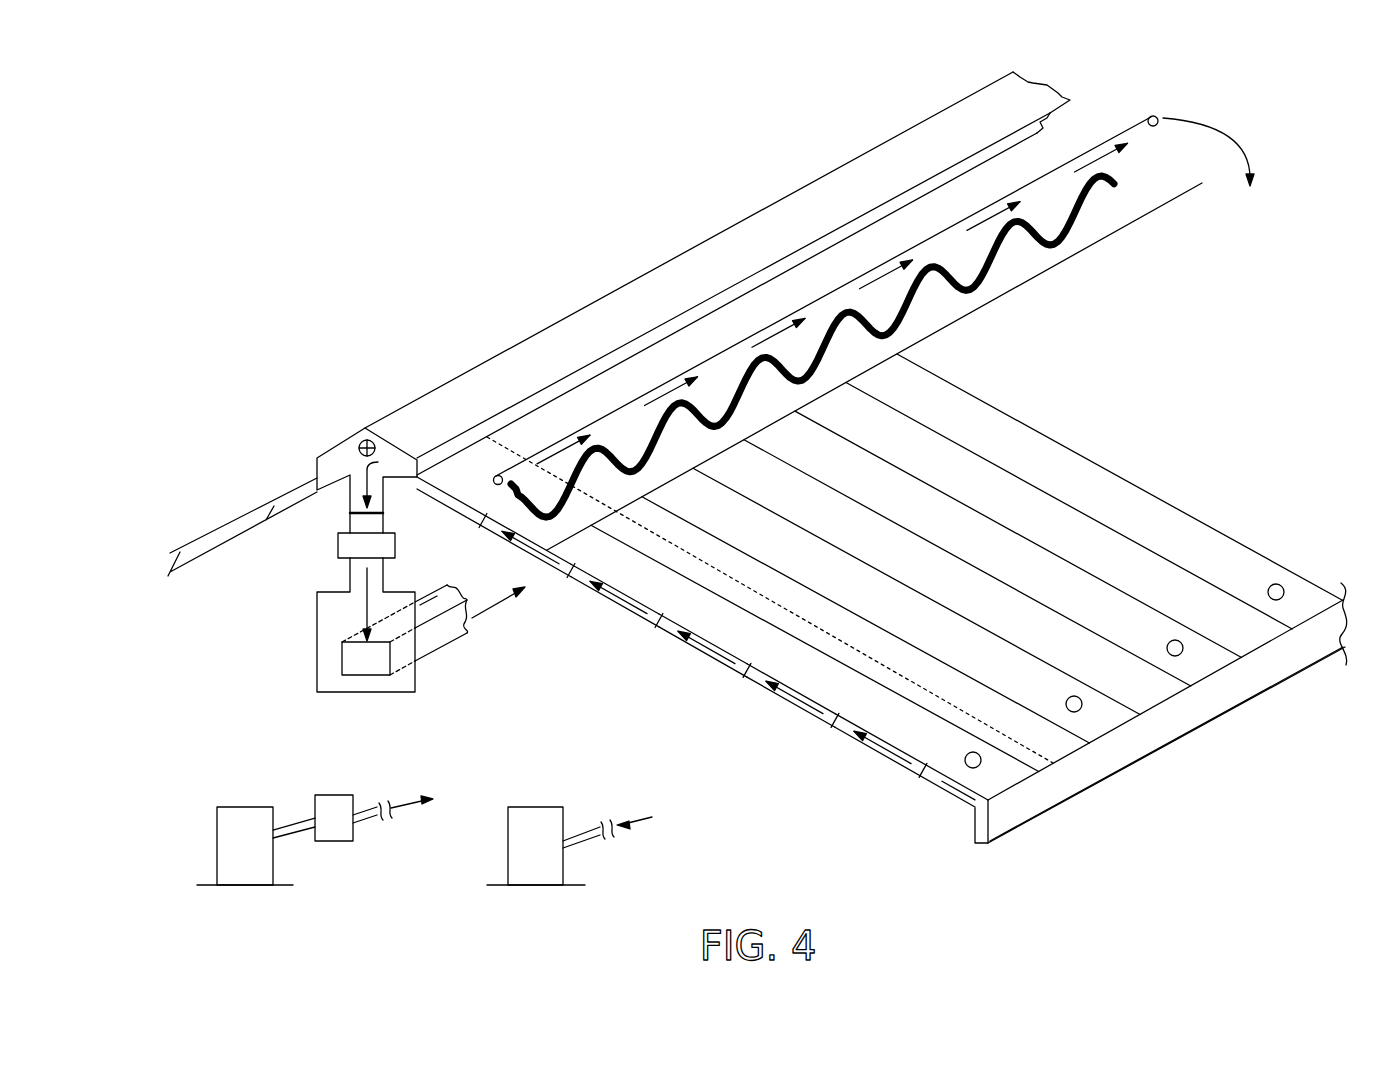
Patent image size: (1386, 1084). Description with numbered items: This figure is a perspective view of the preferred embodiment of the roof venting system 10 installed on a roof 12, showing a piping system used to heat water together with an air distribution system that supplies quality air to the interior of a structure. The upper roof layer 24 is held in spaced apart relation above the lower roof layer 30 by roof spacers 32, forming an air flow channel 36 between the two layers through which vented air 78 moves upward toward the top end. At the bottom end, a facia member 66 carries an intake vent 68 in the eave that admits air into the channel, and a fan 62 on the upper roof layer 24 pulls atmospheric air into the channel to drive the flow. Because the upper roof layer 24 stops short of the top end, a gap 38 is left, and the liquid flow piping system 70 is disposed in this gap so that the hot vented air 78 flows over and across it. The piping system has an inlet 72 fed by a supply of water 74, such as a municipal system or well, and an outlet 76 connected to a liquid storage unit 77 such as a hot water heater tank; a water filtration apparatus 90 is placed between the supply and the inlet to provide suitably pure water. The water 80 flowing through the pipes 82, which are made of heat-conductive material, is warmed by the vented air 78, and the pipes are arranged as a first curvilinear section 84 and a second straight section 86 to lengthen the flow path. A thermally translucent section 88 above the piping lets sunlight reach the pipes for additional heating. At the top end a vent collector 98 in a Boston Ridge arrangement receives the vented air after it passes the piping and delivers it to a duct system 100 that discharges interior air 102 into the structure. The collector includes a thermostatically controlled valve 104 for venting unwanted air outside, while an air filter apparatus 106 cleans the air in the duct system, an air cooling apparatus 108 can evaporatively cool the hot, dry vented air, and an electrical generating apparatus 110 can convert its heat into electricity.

The venting system 10 is at (552, 211).
The roof 12 is at (1088, 367).
The upper roof layer 24 is at (1113, 492).
The lower roof layer 30 is at (795, 706).
The roof spacers 32 is at (920, 770).
The air flow channel 36 is at (652, 621).
The gap 38 is at (475, 521).
The fan 62 is at (1082, 706).
The facia member 66 is at (1250, 680).
The intake vent 68 is at (975, 811).
The liquid flow piping system 70 is at (803, 356).
The inlet 72 is at (1120, 194).
The supply of water 74 is at (243, 807).
The outlet 76 is at (1153, 115).
The liquid storage unit 77 is at (535, 807).
The vented air 78 is at (710, 653).
The water 80 is at (667, 383).
The pipes 82 is at (1048, 176).
The first curvilinear section 84 is at (608, 450).
The second straight section 86 is at (943, 233).
The thermally translucent section 88 is at (543, 433).
The water filtration apparatus 90 is at (335, 795).
The vent collector 98 is at (445, 407).
The duct system 100 is at (433, 640).
The interior air 102 is at (497, 608).
The valve 104 is at (358, 442).
The air filter apparatus 106 is at (347, 513).
The air cooling apparatus 108 is at (320, 617).
The electrical generating apparatus 110 is at (335, 547).